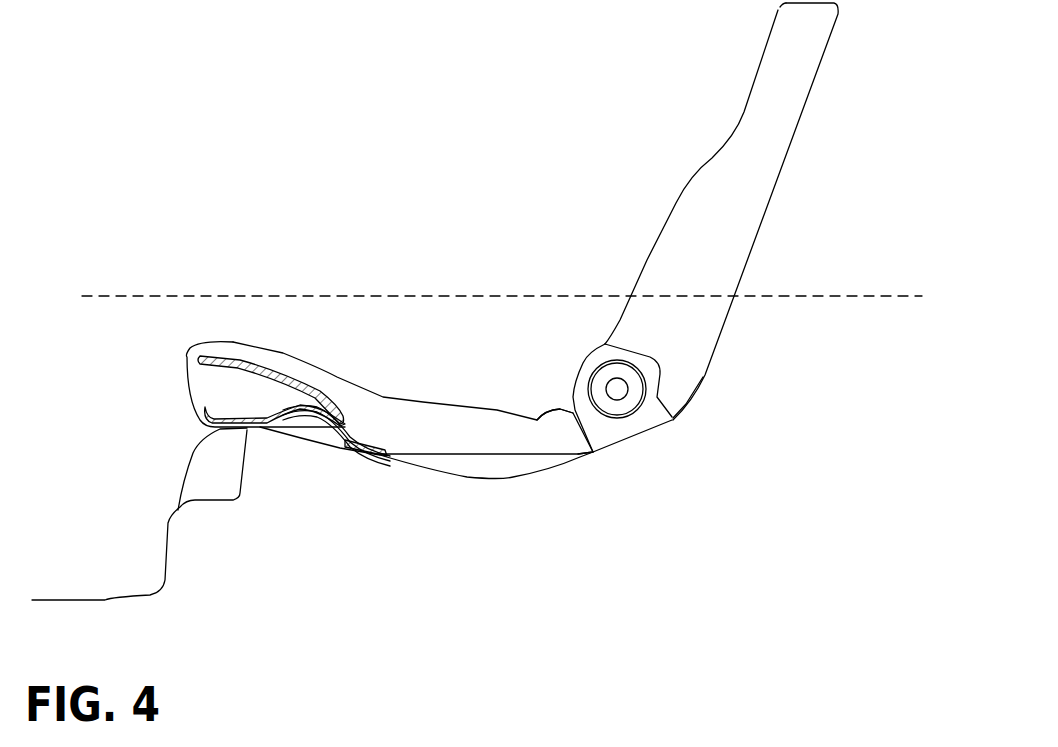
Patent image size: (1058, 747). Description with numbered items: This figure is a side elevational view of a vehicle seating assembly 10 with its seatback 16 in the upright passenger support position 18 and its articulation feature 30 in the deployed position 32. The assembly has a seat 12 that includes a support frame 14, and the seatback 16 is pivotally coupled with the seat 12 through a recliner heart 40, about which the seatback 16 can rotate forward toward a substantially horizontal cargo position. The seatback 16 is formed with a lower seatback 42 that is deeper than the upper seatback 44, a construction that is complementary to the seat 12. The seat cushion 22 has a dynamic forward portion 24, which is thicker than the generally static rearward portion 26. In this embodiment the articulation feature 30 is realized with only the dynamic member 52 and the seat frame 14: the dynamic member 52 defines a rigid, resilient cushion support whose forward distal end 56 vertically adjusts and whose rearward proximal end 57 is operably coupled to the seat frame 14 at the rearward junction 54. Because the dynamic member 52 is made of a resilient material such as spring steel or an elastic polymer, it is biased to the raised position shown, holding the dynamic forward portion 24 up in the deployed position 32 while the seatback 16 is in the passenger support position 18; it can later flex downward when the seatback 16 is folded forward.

The vehicle seating assembly 10 is at (213, 120).
The seat 12 is at (358, 393).
The support frame 14 is at (382, 453).
The seatback 16 is at (762, 203).
The passenger support position 18 is at (620, 168).
The seat cushion 22 is at (410, 415).
The dynamic forward portion 24 is at (222, 345).
The generally static rearward portion 26 is at (543, 437).
The articulation feature 30 is at (173, 416).
The deployed position 32 is at (183, 346).
The recliner heart 40 is at (621, 396).
The lower seatback 42 is at (665, 262).
The upper seatback 44 is at (773, 67).
The dynamic member 52 is at (278, 357).
The rearward junction 54 is at (330, 427).
The forward distal end 56 is at (194, 350).
The rearward proximal end 57 is at (357, 392).